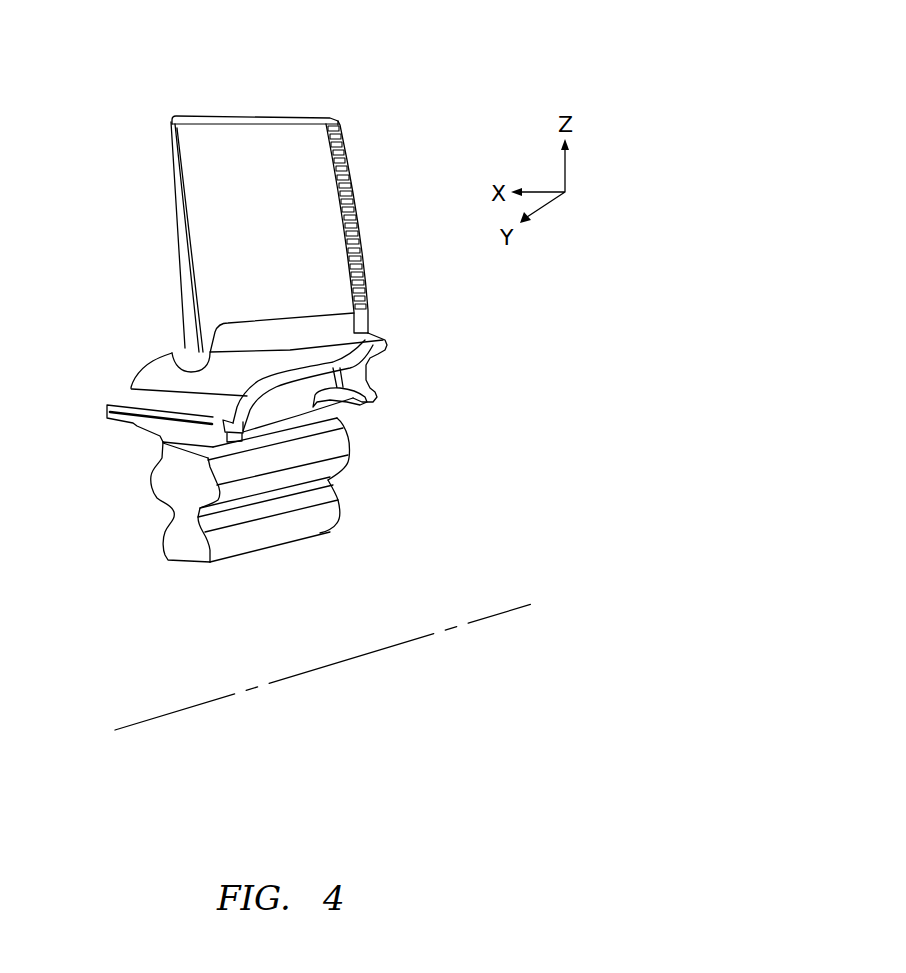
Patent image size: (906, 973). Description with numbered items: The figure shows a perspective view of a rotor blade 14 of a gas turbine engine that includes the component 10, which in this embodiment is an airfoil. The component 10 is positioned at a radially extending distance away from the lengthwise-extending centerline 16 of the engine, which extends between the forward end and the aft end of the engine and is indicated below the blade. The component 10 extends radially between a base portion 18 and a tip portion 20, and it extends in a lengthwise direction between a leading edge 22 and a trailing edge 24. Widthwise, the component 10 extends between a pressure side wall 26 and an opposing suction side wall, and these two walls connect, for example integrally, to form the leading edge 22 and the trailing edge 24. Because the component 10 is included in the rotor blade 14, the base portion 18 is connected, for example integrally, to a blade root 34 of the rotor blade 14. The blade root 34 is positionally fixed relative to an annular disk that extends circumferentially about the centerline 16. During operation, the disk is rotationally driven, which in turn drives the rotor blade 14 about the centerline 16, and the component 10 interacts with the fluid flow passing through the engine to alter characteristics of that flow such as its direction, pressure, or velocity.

The component 10 is at (148, 254).
The rotor blade 14 is at (104, 86).
The centerline 16 is at (520, 607).
The base portion 18 is at (227, 303).
The tip portion 20 is at (248, 118).
The leading edge 22 is at (172, 168).
The trailing edge 24 is at (345, 163).
The pressure side wall 26 is at (303, 235).
The blade root 34 is at (397, 343).